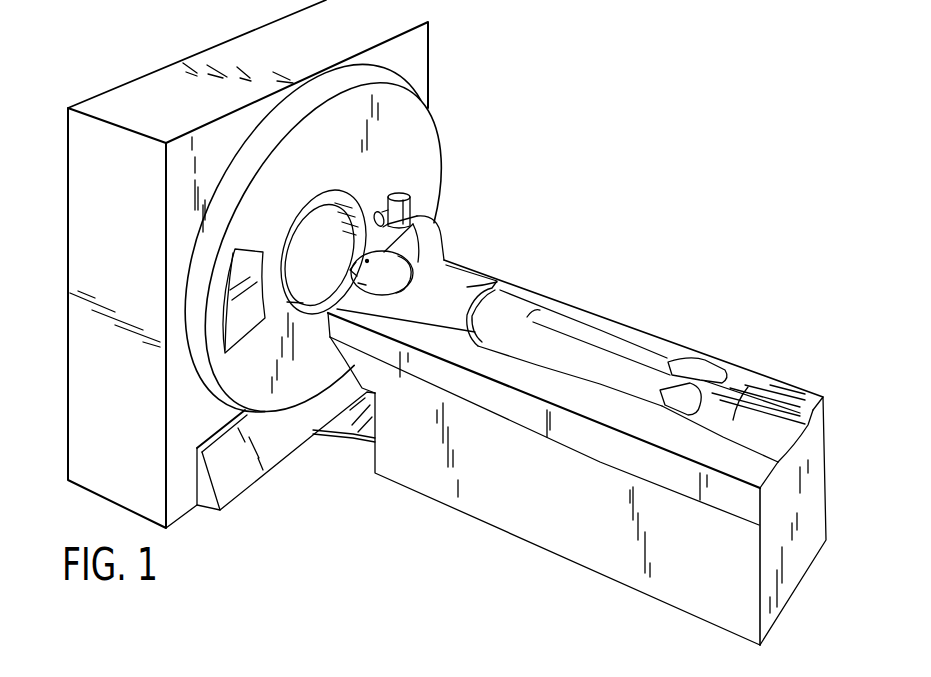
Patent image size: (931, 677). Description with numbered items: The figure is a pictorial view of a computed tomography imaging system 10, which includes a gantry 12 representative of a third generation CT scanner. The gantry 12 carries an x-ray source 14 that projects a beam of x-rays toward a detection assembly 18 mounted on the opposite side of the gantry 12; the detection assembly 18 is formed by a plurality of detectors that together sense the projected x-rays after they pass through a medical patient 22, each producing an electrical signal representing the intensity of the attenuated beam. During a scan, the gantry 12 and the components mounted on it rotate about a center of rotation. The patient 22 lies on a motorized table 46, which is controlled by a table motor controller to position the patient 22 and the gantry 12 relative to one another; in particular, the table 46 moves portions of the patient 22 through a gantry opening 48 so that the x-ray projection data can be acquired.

The CT imaging system 10 is at (548, 141).
The gantry 12 is at (419, 159).
The x-ray source 14 is at (410, 209).
The detection assembly 18 is at (238, 332).
The patient 22 is at (470, 285).
The motorized table 46 is at (556, 538).
The gantry opening 48 is at (308, 247).